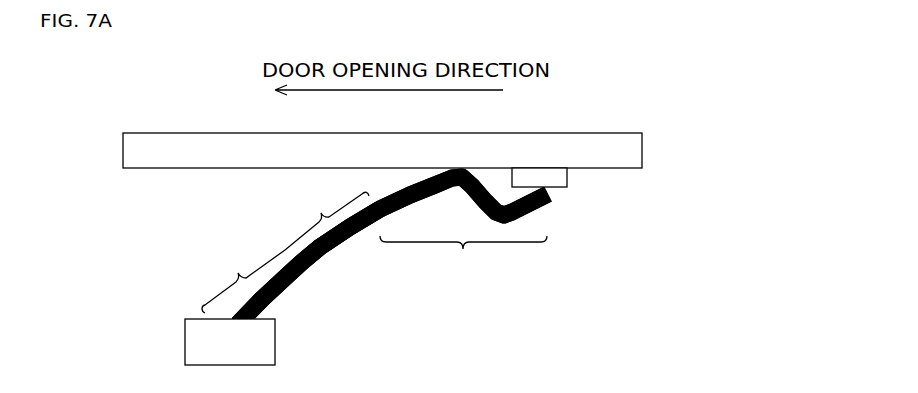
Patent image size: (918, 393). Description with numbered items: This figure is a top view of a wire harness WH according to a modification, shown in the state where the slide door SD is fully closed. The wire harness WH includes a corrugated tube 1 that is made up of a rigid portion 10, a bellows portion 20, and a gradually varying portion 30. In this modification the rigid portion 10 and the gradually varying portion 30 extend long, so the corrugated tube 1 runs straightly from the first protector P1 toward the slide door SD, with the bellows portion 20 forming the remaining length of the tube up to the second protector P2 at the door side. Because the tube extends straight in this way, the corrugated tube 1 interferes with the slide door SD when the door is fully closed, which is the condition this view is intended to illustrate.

The slide door SD is at (175, 139).
The wire harness WH is at (467, 293).
The corrugated tube 1 is at (300, 280).
The rigid portion 10 is at (252, 287).
The bellows portion 20 is at (464, 228).
The gradually varying portion 30 is at (332, 227).
The first protector P1 is at (192, 338).
The second protector P2 is at (551, 189).